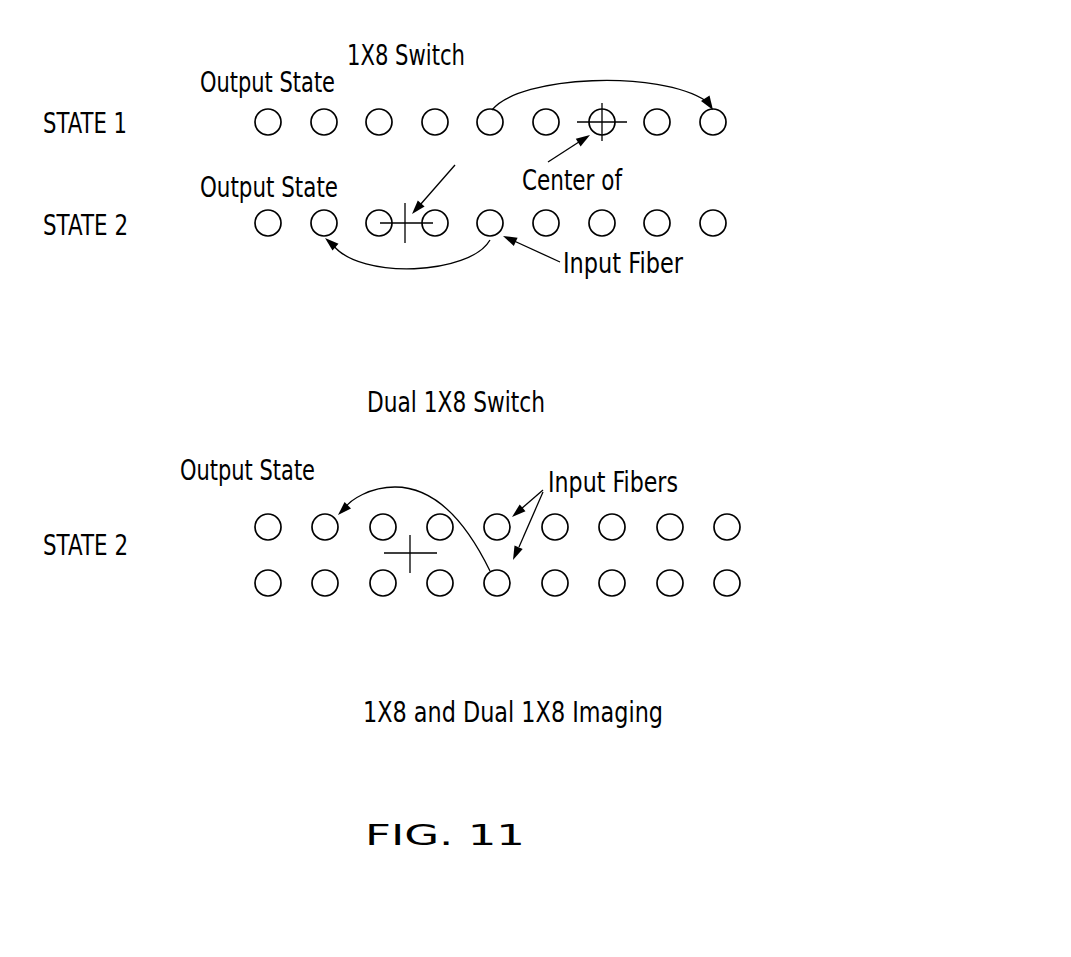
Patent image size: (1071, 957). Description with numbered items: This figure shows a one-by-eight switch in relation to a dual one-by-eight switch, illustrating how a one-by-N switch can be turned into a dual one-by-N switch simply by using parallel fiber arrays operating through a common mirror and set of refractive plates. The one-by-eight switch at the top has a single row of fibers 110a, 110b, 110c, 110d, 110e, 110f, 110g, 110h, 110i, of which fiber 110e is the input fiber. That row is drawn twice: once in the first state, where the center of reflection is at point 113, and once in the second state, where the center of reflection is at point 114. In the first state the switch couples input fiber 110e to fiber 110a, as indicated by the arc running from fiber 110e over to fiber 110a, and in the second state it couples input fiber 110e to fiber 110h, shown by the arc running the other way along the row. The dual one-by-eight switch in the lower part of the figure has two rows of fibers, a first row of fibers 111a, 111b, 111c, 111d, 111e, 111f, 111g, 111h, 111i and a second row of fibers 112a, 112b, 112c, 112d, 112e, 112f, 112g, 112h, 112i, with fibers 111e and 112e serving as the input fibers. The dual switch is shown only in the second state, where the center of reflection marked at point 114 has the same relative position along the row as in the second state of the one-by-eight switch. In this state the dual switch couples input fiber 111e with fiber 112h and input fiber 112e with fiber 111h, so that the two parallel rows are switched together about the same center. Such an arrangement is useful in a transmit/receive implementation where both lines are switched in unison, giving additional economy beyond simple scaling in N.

The fiber 110a is at (722, 135).
The fiber 110b is at (665, 135).
The fiber 110c is at (611, 136).
The fiber 110d is at (540, 136).
The input fiber 110e is at (483, 136).
The fiber 110f is at (427, 136).
The fiber 110g is at (368, 135).
The fiber 110h is at (312, 135).
The fiber 110i is at (258, 133).
The fiber 111a is at (740, 527).
The fiber 111b is at (680, 518).
The fiber 111c is at (622, 518).
The fiber 111d is at (550, 513).
The input fiber 111e is at (497, 513).
The fiber 111f is at (441, 513).
The fiber 111g is at (387, 513).
The fiber 111h is at (338, 513).
The fiber 111i is at (280, 513).
The fiber 112a is at (735, 596).
The fiber 112b is at (672, 596).
The fiber 112c is at (615, 596).
The fiber 112d is at (558, 596).
The input fiber 112e is at (504, 595).
The fiber 112f is at (445, 594).
The fiber 112g is at (378, 594).
The fiber 112h is at (316, 593).
The fiber 112i is at (256, 586).
The center of reflection point 113 is at (600, 100).
The center of reflection point 114 is at (405, 245).